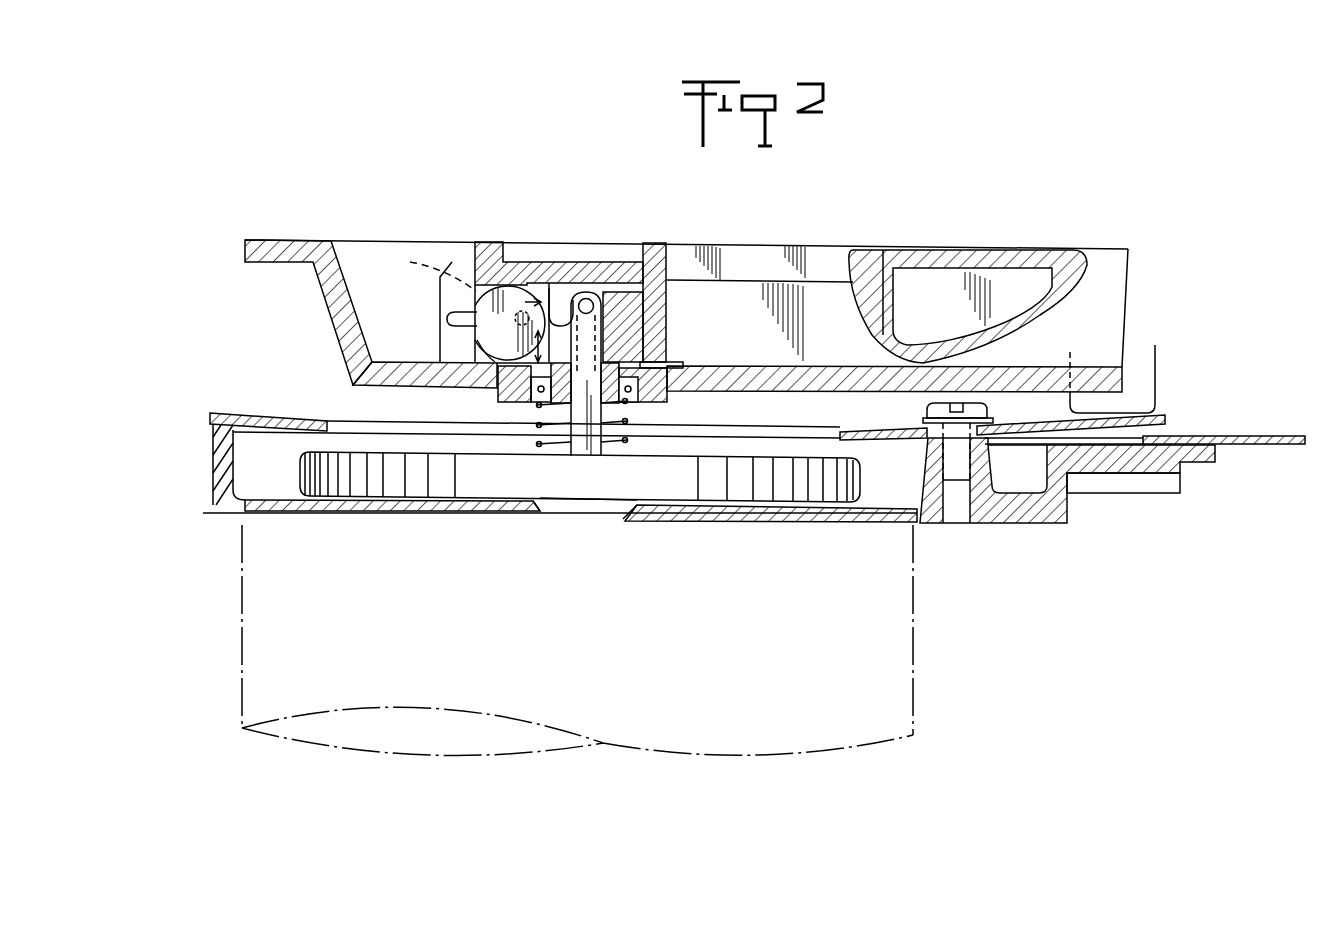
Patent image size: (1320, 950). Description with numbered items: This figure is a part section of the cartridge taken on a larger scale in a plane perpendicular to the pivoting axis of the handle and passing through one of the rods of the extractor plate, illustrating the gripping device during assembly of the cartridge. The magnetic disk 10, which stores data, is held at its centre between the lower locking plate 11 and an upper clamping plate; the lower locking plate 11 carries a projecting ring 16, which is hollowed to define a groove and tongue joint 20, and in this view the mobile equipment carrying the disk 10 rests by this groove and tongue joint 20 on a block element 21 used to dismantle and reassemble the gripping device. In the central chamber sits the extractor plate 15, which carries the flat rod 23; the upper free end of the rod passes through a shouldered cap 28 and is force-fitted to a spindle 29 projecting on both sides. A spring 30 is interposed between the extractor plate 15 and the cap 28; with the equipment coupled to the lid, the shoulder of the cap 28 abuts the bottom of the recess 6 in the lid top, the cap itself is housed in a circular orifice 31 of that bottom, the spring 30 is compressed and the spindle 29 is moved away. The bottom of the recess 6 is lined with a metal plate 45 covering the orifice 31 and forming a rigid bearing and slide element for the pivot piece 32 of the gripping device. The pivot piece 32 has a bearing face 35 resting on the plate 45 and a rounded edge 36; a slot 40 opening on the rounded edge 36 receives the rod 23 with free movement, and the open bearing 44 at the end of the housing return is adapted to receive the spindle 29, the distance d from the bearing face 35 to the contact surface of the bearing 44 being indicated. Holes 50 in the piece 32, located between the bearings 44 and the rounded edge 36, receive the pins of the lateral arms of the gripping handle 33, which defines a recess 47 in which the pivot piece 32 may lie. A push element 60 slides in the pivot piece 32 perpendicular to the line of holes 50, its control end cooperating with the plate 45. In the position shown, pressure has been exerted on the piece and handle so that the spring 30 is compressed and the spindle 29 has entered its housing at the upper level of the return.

The recess 6 is at (354, 256).
The recess 47 is at (452, 262).
The slot 40 is at (533, 290).
The open bearing 44 is at (556, 300).
The spindle 29 is at (590, 300).
The gripping handle 33 is at (868, 250).
The holes 50 is at (424, 267).
The pivot piece 32 is at (490, 322).
The push element 60 is at (449, 320).
The rounded edge 36 is at (477, 350).
The metal plate 45 is at (445, 378).
The bearing face 35 is at (505, 360).
The circular orifice 31 is at (683, 363).
The spring 30 is at (625, 422).
The shouldered cap 28 is at (672, 392).
The groove and tongue joint 20 is at (272, 514).
The extractor plate 15 is at (417, 478).
The flat rod 23 is at (587, 437).
The block element 21 is at (250, 620).
The projecting ring 16 is at (1067, 510).
The lower locking plate 11 is at (1180, 477).
The magnetic disk 10 is at (1268, 445).